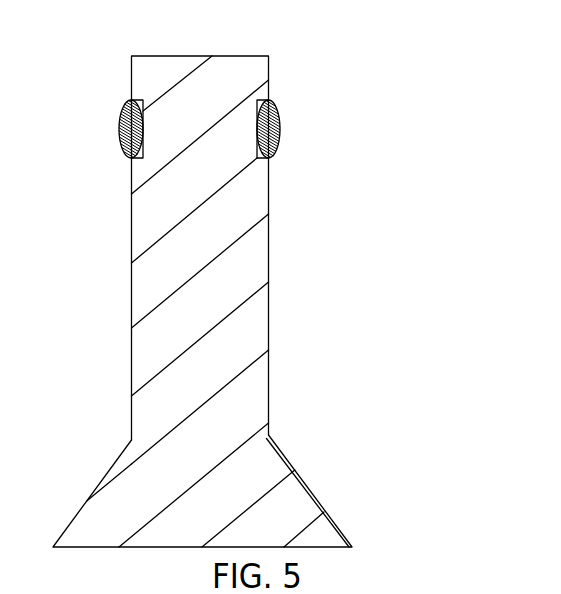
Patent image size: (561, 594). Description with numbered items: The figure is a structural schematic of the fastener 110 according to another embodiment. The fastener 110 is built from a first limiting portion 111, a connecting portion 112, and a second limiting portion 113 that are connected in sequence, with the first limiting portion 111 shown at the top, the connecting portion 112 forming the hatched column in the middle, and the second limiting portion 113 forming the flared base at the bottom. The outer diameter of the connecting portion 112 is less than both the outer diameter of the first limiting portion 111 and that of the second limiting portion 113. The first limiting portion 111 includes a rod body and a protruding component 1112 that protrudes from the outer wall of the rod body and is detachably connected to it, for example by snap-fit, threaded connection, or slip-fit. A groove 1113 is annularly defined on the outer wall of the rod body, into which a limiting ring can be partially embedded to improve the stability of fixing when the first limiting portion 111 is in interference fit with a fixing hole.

The fastener 110 is at (232, 18).
The first limiting portion 111 is at (374, 122).
The protruding component 1112 is at (278, 137).
The groove 1113 is at (271, 96).
The connecting portion 112 is at (247, 352).
The second limiting portion 113 is at (282, 478).